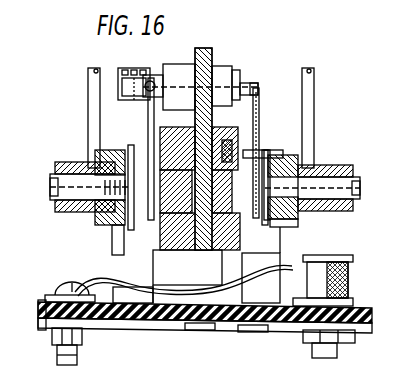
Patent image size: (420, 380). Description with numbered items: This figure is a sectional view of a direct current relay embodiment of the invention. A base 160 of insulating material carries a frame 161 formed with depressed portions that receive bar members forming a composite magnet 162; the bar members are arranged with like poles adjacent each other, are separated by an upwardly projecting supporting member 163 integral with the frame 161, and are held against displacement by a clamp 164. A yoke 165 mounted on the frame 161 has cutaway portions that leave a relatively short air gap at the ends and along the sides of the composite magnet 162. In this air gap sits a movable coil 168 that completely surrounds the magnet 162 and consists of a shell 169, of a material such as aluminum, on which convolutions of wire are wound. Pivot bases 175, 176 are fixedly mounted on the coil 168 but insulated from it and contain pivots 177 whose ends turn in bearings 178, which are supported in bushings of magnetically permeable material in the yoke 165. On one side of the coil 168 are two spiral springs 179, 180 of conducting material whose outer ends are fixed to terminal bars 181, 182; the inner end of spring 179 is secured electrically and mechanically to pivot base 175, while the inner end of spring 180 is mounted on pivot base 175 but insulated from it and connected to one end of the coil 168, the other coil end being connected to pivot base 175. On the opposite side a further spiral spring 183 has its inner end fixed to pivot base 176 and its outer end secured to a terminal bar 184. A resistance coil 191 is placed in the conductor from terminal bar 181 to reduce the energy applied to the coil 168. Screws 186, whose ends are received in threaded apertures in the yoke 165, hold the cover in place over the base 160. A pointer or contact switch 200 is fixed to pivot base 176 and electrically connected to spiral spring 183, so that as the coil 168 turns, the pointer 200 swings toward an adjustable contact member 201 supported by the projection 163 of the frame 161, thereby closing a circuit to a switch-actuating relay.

The base 160 is at (204, 334).
The frame 161 is at (165, 270).
The composite magnet 162 is at (196, 236).
The supporting member 163 is at (203, 48).
The clamp 164 is at (160, 124).
The yoke 165 is at (352, 176).
The movable coil 168 is at (292, 266).
The shell 169 is at (184, 283).
The pivot base 175 is at (289, 165).
The pivot base 176 is at (115, 260).
The pivots 177 is at (125, 246).
The bearings 178 is at (92, 228).
The spiral spring 179 is at (310, 167).
The spiral spring 180 is at (233, 165).
The terminal bar 181 is at (288, 236).
The terminal bar 182 is at (261, 152).
The spiral spring 183 is at (118, 158).
The terminal bar 184 is at (100, 150).
The screws 186 is at (90, 74).
The resistance coil 191 is at (366, 252).
The pointer or contact switch 200 is at (150, 106).
The adjustable contact member 201 is at (148, 60).